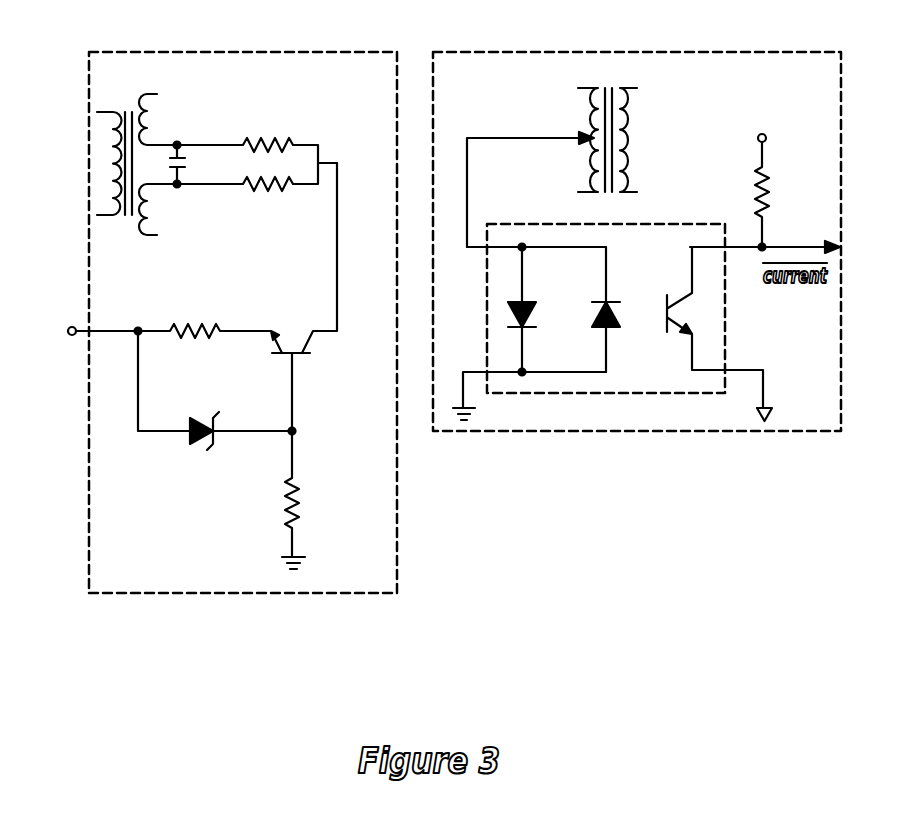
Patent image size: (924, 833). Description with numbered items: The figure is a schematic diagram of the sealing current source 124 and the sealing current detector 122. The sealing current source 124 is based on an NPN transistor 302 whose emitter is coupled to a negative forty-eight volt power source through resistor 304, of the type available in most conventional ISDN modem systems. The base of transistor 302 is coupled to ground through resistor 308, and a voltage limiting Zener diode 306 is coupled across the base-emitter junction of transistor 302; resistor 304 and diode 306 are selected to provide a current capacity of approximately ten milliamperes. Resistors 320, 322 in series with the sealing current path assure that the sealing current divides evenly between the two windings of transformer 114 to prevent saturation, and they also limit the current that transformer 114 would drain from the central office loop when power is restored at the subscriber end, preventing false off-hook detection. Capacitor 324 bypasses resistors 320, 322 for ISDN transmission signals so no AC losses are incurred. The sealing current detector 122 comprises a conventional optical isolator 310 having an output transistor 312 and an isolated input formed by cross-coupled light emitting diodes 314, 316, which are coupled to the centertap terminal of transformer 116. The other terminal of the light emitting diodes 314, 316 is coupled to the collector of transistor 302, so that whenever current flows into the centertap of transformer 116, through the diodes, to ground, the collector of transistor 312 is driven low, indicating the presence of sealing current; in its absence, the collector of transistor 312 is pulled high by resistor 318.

The sealing current source 124 is at (208, 51).
The transformer 114 is at (125, 107).
The resistor 320 is at (247, 140).
The resistor 322 is at (273, 190).
The capacitor 324 is at (183, 180).
The resistor 304 is at (173, 328).
The NPN transistor 302 is at (305, 355).
The voltage limiting (Zener) diode 306 is at (193, 438).
The resistor 308 is at (302, 507).
The sealing current detector 122 is at (505, 52).
The transformer 116 is at (580, 87).
The resistor 318 is at (767, 177).
The optical isolator 310 is at (667, 224).
The light emitting diode 314 is at (527, 302).
The light emitting diode 316 is at (612, 302).
The output transistor 312 is at (668, 332).